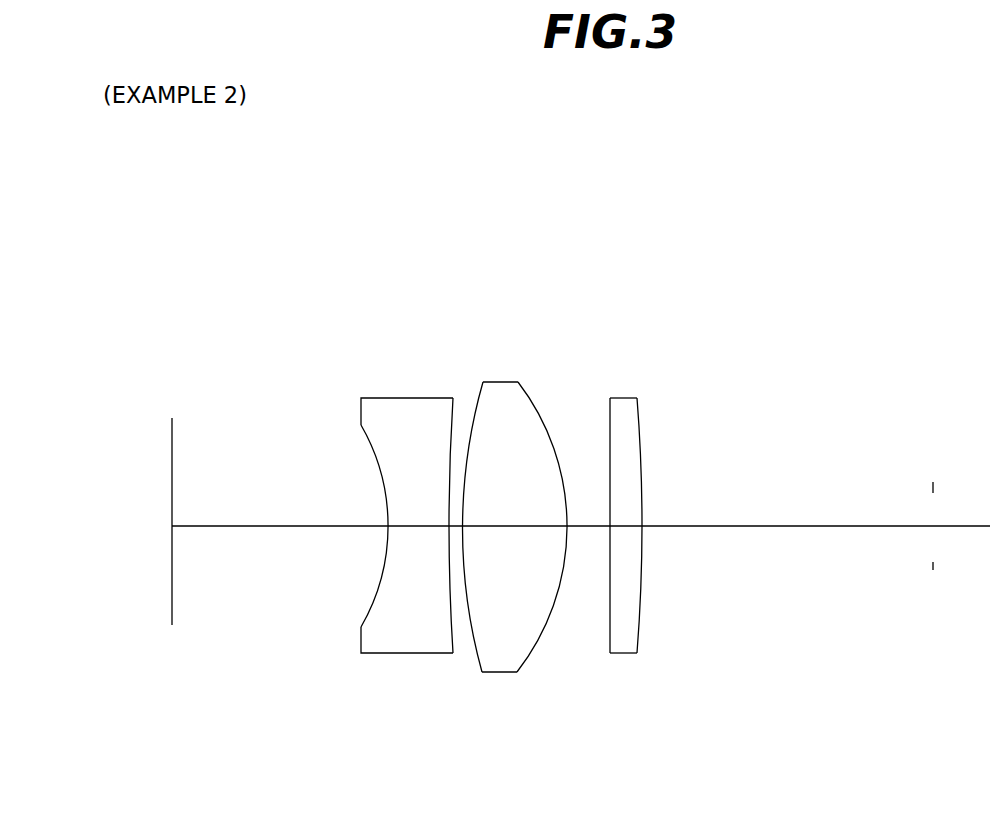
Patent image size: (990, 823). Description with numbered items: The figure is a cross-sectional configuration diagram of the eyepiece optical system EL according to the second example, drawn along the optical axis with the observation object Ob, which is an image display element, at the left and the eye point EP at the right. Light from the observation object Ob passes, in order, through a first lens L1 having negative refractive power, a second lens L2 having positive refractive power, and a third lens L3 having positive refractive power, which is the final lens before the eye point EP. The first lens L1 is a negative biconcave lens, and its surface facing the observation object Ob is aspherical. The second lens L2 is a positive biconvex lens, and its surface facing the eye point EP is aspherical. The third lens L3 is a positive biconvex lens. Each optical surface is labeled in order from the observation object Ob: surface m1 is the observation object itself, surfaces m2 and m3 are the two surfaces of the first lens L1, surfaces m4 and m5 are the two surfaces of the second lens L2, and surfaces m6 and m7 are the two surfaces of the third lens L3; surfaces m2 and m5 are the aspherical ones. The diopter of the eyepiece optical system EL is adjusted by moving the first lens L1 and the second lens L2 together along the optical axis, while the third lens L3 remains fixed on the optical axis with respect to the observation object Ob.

The optical surface m1 is at (171, 412).
The optical surface m2 is at (365, 434).
The optical surface m3 is at (454, 412).
The optical surface m4 is at (478, 400).
The optical surface m5 is at (529, 401).
The optical surface m6 is at (610, 415).
The optical surface m7 is at (640, 425).
The observation object Ob is at (172, 533).
The eye point EP is at (933, 577).
The eyepiece optical system EL is at (728, 202).
The first lens L1 is at (401, 550).
The second lens L2 is at (515, 550).
The third lens L3 is at (628, 550).